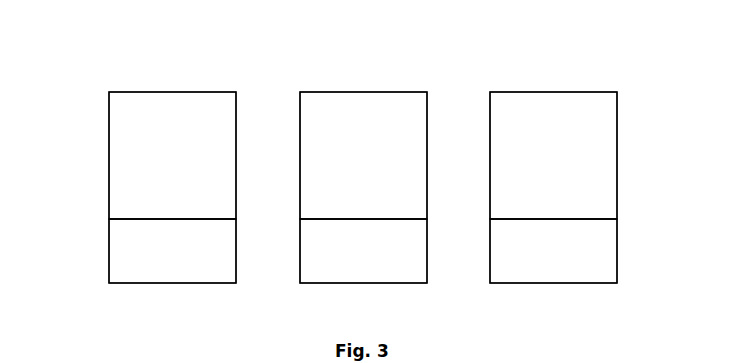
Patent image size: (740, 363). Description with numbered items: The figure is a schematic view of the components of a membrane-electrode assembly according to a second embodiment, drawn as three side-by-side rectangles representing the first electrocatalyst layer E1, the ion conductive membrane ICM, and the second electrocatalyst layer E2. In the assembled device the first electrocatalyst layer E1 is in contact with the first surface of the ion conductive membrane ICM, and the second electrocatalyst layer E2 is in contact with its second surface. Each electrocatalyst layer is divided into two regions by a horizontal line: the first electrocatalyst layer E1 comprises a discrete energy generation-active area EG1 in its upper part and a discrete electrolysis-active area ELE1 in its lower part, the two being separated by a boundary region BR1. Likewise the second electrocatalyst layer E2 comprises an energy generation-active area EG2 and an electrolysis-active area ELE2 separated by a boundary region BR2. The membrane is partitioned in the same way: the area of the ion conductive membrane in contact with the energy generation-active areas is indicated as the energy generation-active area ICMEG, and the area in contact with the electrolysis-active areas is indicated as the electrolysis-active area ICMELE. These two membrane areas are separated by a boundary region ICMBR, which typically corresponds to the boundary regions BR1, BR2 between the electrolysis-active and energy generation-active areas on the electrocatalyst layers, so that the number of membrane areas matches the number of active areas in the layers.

The first electrocatalyst layer E1 is at (125, 84).
The energy generation-active area EG1 is at (98, 163).
The boundary region BR1 is at (99, 219).
The electrolysis-active area ELE1 is at (109, 264).
The ion conductive membrane ICM is at (338, 73).
The energy generation-active area of the ion conductive membrane ICMEG is at (408, 90).
The boundary region of the ion conductive membrane ICMBR is at (294, 219).
The electrolysis-active area of the ion conductive membrane ICMELE is at (383, 292).
The second electrocatalyst layer E2 is at (615, 84).
The energy generation-active area EG2 is at (626, 156).
The boundary region BR2 is at (622, 219).
The electrolysis-active area ELE2 is at (621, 264).